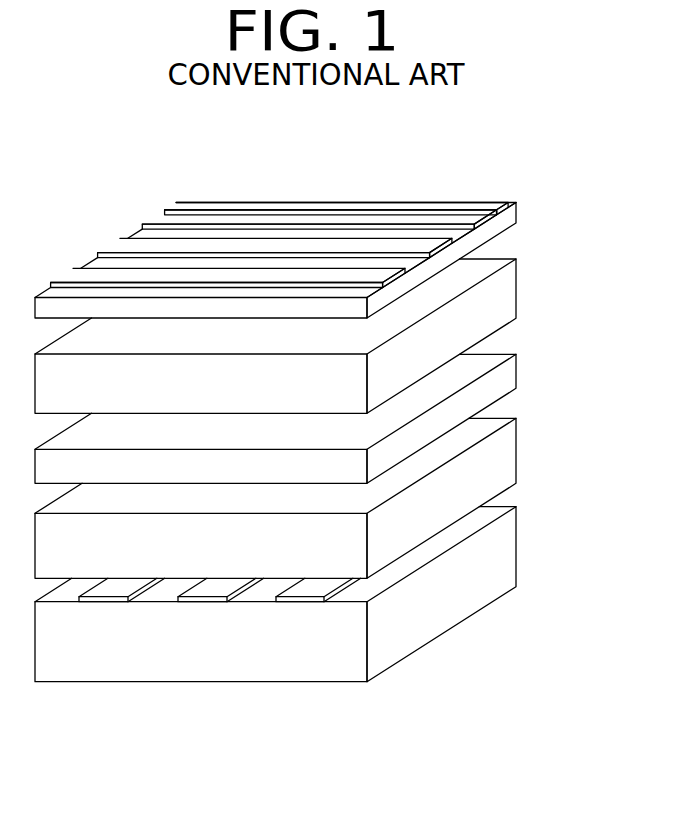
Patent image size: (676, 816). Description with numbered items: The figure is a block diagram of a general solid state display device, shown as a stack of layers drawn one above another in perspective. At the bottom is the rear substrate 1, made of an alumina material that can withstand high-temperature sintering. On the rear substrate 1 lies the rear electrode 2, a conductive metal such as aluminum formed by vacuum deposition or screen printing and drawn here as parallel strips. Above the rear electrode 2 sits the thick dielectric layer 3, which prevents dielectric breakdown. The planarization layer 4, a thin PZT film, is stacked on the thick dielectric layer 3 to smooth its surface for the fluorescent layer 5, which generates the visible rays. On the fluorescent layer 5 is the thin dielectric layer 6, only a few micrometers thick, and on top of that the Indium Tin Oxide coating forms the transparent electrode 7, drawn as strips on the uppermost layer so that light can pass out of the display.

The rear substrate 1 is at (503, 550).
The rear electrode 2 is at (307, 590).
The thick dielectric layer 3 is at (503, 458).
The planarization layer 4 is at (503, 376).
The fluorescent layer 5 is at (503, 294).
The thin dielectric layer 6 is at (503, 220).
The transparent electrode 7 is at (445, 217).